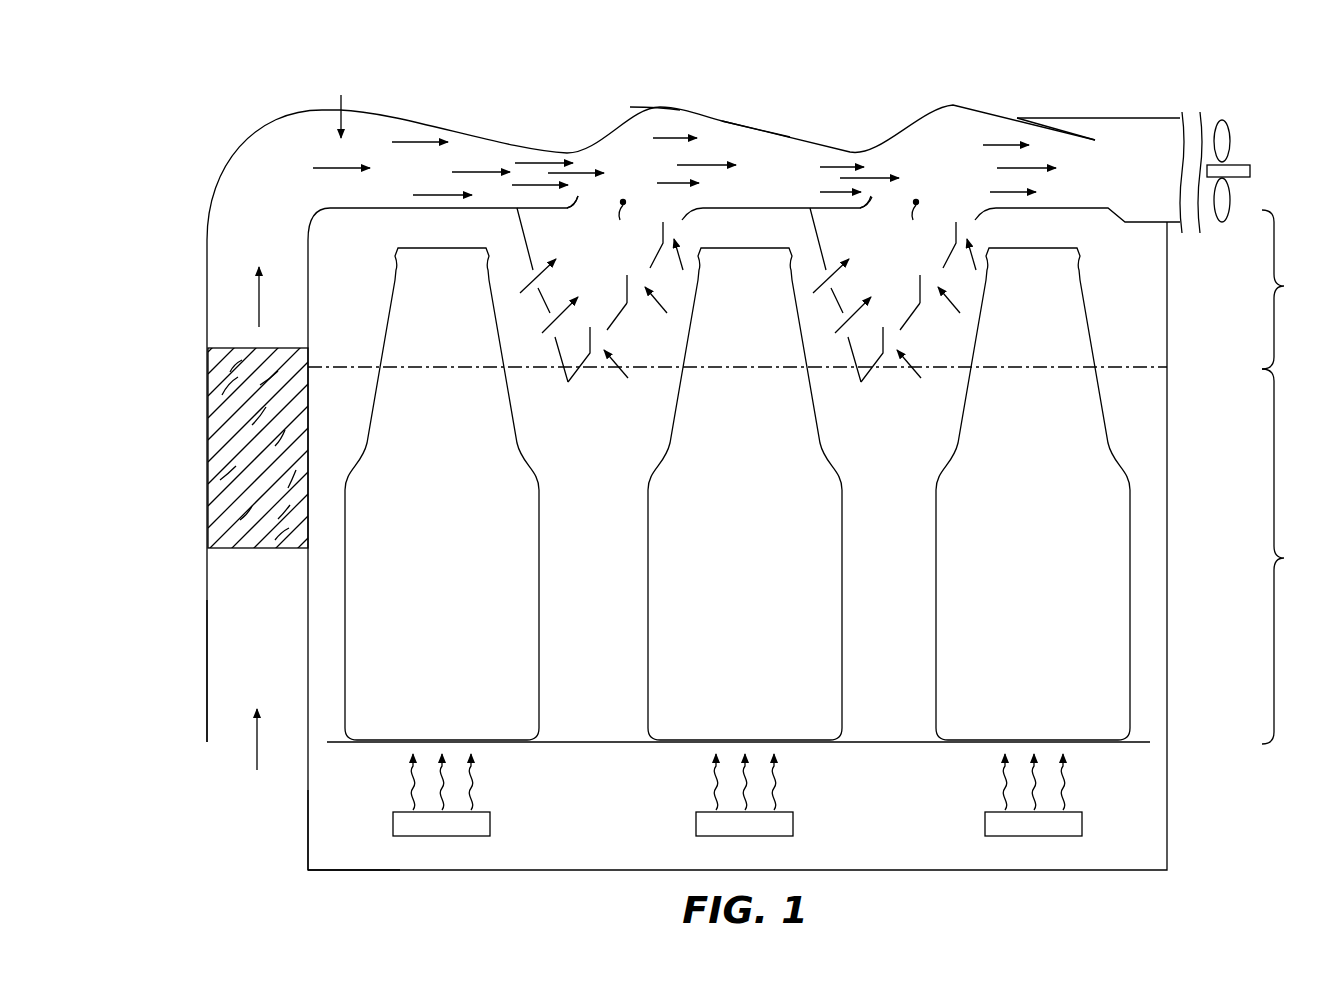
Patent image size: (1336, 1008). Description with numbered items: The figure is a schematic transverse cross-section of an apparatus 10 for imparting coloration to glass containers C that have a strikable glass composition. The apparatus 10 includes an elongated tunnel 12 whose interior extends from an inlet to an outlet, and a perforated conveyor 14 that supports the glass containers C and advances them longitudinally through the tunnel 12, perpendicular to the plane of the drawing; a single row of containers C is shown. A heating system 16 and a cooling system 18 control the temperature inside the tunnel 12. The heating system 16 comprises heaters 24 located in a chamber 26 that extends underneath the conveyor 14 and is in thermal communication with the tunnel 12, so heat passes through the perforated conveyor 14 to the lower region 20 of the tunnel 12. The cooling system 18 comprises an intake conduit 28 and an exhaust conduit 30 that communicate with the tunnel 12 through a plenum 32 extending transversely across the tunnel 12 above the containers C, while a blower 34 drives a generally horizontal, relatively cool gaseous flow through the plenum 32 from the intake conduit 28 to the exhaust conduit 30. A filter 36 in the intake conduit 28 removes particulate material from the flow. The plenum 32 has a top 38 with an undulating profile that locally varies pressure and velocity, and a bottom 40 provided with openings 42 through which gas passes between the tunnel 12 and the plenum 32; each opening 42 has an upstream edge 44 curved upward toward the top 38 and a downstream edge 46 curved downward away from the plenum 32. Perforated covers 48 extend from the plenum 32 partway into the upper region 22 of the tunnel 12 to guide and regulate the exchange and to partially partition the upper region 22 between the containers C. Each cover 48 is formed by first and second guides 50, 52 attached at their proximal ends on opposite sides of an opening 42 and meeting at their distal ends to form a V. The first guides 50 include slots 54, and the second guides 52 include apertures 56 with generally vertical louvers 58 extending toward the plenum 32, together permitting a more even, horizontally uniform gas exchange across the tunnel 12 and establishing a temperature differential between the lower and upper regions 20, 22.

The apparatus 10 is at (217, 98).
The elongated tunnel 12 is at (1169, 405).
The conveyor 14 is at (580, 744).
The heating system 16 is at (326, 848).
The cooling system 18 is at (346, 105).
The lower region 20 is at (1290, 556).
The upper region 22 is at (1290, 289).
The heaters 24 is at (490, 825).
The chamber 26 is at (904, 824).
The intake conduit 28 is at (207, 598).
The exhaust conduit 30 is at (1132, 118).
The plenum 32 is at (757, 128).
The blower 34 is at (1230, 133).
The filter 36 is at (207, 427).
The top 38 is at (644, 107).
The bottom 40 is at (380, 210).
The openings 42 is at (766, 225).
The upstream edges 44 is at (578, 199).
The downstream edges 46 is at (682, 220).
The covers 48 is at (572, 393).
The first guides 50 is at (522, 232).
The second guides 52 is at (613, 318).
The slots 54 is at (538, 281).
The apertures 56 is at (643, 273).
The louvers 58 is at (627, 278).
The glass containers C is at (539, 620).